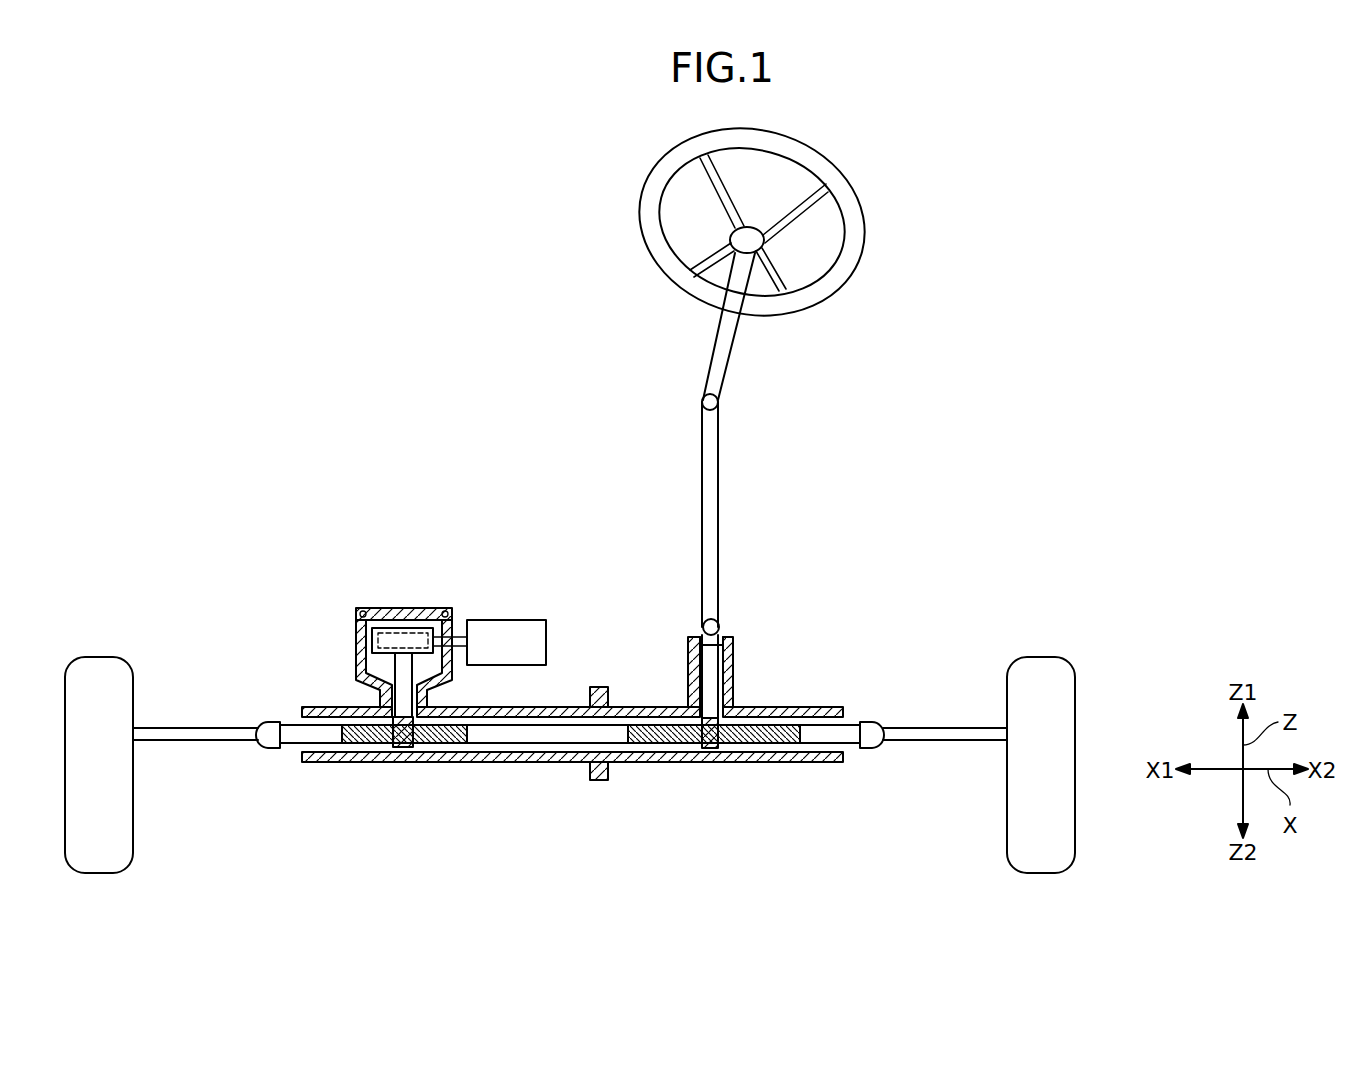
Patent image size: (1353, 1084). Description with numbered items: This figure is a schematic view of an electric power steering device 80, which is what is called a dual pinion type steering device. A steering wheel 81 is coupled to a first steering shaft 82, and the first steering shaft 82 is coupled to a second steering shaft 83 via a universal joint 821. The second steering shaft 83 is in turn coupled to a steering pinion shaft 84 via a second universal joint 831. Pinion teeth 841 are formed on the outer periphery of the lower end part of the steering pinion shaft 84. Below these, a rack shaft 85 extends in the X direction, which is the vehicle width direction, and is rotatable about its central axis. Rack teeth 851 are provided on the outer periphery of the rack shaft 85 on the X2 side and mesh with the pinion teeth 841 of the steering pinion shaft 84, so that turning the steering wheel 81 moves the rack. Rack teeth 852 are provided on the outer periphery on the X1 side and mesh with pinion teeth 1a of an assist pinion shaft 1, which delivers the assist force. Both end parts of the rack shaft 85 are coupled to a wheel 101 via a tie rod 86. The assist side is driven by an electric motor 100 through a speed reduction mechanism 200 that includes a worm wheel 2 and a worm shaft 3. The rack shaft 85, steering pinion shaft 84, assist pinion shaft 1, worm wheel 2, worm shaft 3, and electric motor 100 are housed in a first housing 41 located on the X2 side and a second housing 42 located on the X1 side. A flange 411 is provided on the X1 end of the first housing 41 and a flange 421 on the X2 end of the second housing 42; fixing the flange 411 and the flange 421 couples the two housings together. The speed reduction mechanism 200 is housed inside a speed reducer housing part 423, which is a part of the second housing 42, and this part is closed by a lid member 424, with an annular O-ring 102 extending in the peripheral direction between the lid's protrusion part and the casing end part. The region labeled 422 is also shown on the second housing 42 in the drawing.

The electric power steering device 80 is at (992, 470).
The steering wheel 81 is at (852, 213).
The first steering shaft 82 is at (720, 355).
The universal joint 821 is at (712, 401).
The second steering shaft 83 is at (713, 505).
The universal joint 831 is at (718, 627).
The steering pinion shaft 84 is at (712, 677).
The pinion teeth 841 is at (714, 745).
The rack shaft 85 is at (490, 735).
The rack teeth 851 is at (770, 740).
The rack teeth 852 is at (368, 745).
The tie rod 86 is at (183, 735).
The wheel 101 is at (102, 850).
The electric motor 100 is at (512, 632).
The O-ring 102 is at (433, 615).
The assist pinion shaft 1 is at (403, 694).
The pinion teeth 1a is at (403, 740).
The worm wheel 2 is at (366, 650).
The speed reduction mechanism 200 is at (376, 615).
The worm shaft 3 is at (393, 610).
The first housing 41 is at (690, 768).
The flange 411 is at (605, 772).
The second housing 42 is at (423, 768).
The flange 421 is at (595, 770).
The bottom wall 422 is at (333, 762).
The speed reducer housing part 423 is at (360, 640).
The lid member 424 is at (392, 622).